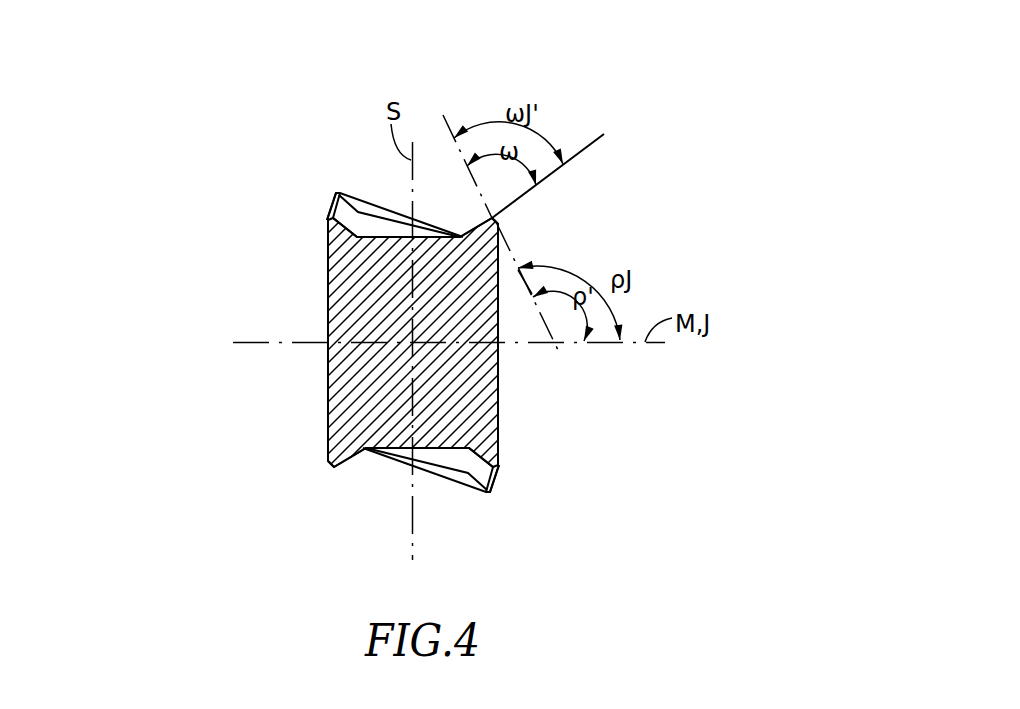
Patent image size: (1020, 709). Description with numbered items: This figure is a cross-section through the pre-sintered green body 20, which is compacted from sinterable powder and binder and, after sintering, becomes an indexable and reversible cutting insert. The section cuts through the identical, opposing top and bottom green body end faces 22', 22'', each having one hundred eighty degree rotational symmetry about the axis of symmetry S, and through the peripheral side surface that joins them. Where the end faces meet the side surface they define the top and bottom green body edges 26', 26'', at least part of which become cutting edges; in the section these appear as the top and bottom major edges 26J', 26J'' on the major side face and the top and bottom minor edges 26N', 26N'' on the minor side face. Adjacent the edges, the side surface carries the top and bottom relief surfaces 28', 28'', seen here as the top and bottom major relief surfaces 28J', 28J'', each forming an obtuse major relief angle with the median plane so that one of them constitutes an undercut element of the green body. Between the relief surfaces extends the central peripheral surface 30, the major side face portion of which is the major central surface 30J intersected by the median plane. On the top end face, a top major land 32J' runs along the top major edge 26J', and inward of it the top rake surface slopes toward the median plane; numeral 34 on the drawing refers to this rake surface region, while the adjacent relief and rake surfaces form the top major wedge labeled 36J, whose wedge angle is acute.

The green body 20 is at (771, 219).
The top green body end face 22' is at (396, 134).
The bottom green body end face 22'' is at (375, 507).
The top green body edge 26' is at (318, 190).
The bottom green body edge 26'' is at (357, 503).
The top major edge 26J' is at (457, 192).
The bottom major edge 26J'' is at (341, 498).
The top minor edge 26N' is at (380, 151).
The bottom minor edge 26N'' is at (468, 539).
The top relief surface 28' is at (558, 176).
The bottom relief surface 28'' is at (402, 447).
The top major relief surface 28J' is at (586, 217).
The bottom major relief surface 28J'' is at (353, 485).
The central peripheral surface 30 is at (326, 272).
The major central surface 30J is at (328, 292).
The top major land 32J' is at (285, 144).
The cutting corner 34 is at (468, 217).
The clearance surface portion 36J is at (500, 255).